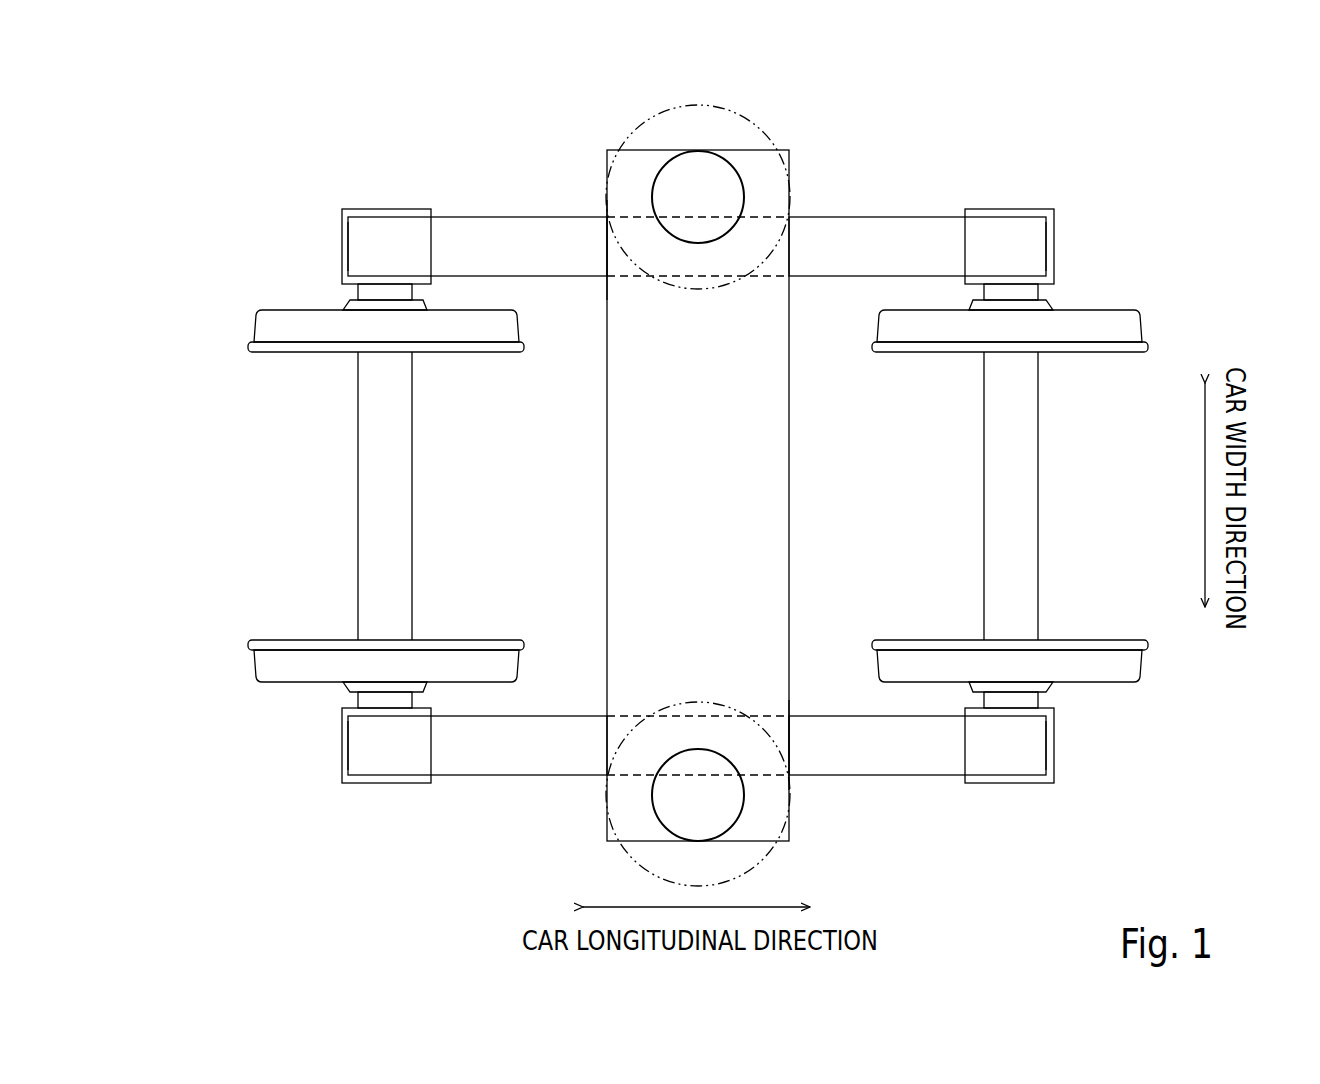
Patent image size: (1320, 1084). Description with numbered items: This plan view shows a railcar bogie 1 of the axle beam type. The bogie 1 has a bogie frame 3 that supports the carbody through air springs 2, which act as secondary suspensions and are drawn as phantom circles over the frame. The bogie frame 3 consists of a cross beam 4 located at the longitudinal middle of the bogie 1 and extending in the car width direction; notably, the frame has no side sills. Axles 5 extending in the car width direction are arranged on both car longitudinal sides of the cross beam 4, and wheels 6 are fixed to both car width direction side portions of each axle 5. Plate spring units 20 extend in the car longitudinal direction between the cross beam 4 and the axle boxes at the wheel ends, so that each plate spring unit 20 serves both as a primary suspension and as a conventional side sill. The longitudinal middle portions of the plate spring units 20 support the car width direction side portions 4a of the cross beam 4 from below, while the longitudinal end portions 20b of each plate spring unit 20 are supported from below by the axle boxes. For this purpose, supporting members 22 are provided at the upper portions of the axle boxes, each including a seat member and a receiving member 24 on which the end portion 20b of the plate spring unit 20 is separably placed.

The railcar bogie 1 is at (300, 155).
The air spring 2 is at (708, 105).
The bogie frame 3 is at (782, 150).
The cross beam 4 is at (624, 482).
The car width direction side portion of the cross beam 4a is at (618, 260).
The axle 5 is at (358, 476).
The wheel 6 is at (275, 310).
The plate spring unit 20 is at (890, 216).
The longitudinal direction end portion of the plate spring unit 20b is at (398, 238).
The supporting member 22 is at (373, 209).
The receiving member 24 is at (342, 240).